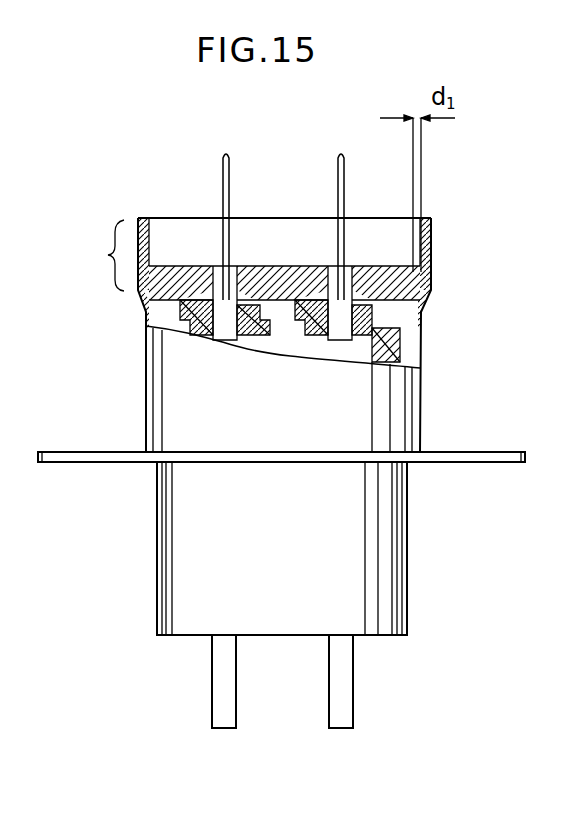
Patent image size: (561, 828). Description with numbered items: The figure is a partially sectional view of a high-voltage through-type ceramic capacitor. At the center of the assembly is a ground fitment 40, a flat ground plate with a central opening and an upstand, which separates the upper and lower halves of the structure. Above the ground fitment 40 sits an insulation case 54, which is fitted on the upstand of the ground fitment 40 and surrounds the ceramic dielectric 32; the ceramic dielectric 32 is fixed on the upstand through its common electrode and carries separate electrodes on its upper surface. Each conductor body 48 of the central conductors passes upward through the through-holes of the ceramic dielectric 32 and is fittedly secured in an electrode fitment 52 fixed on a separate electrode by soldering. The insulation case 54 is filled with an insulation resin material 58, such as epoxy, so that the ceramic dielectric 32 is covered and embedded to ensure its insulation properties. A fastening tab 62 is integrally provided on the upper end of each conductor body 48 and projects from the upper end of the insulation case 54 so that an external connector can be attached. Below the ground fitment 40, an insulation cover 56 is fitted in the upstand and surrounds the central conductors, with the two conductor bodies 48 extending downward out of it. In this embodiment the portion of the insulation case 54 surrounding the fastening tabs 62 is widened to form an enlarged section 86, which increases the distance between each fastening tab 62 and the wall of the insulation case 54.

The ceramic dielectric 32 is at (400, 342).
The ground fitment 40 is at (100, 462).
The conductor body 48 is at (212, 690).
The electrode fitment 52 is at (195, 285).
The insulation case 54 is at (431, 252).
The insulation cover 56 is at (407, 548).
The insulation resin material 58 is at (272, 275).
The fastening tab 62 is at (221, 170).
The enlarged section 86 is at (96, 255).